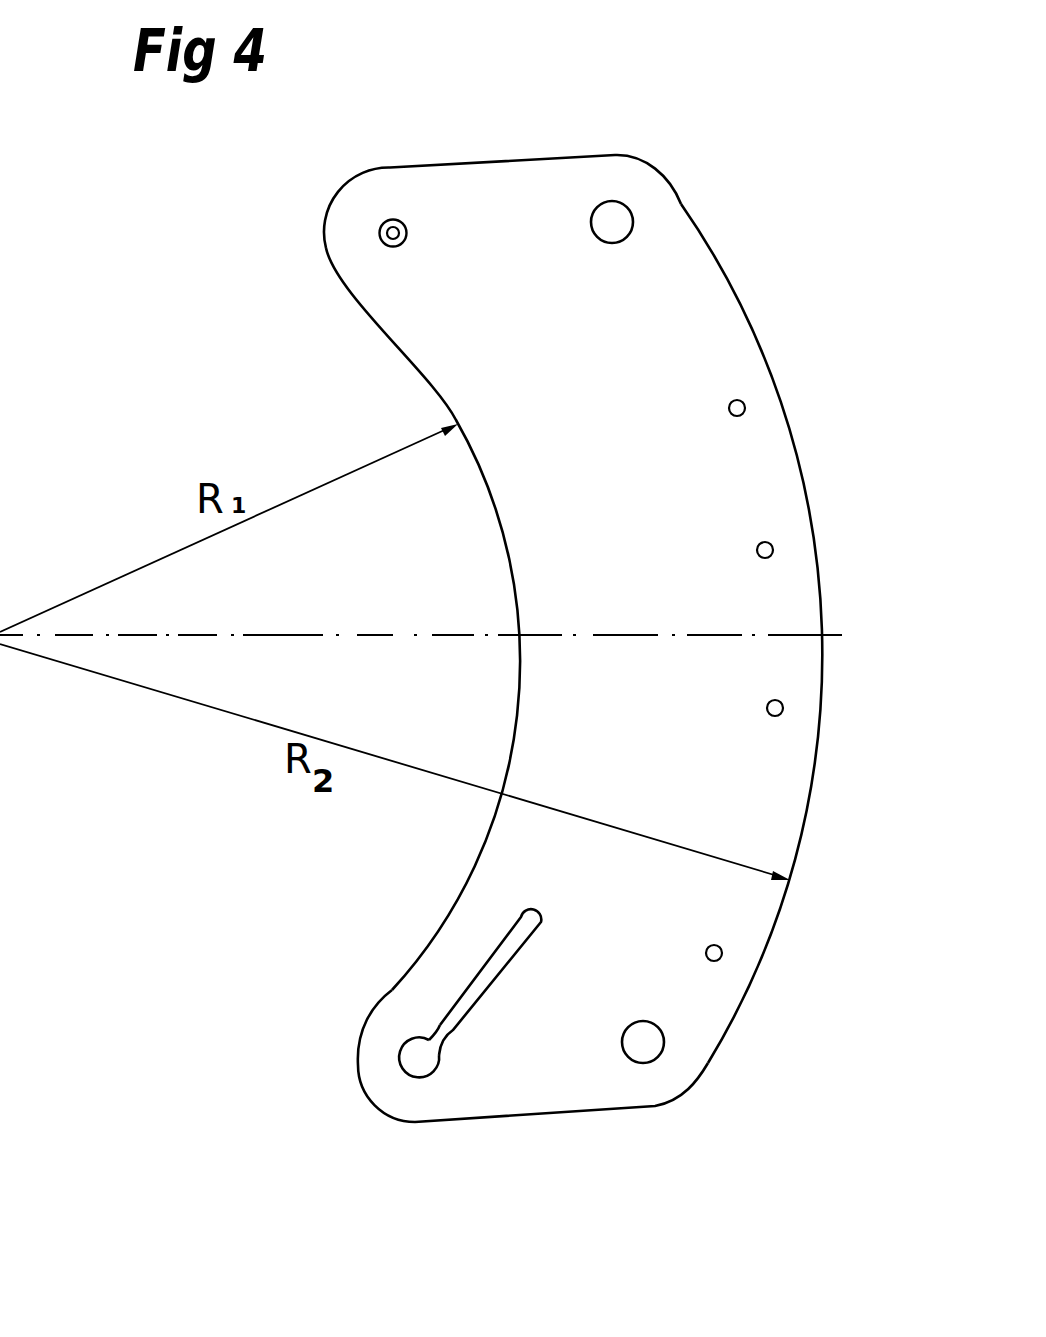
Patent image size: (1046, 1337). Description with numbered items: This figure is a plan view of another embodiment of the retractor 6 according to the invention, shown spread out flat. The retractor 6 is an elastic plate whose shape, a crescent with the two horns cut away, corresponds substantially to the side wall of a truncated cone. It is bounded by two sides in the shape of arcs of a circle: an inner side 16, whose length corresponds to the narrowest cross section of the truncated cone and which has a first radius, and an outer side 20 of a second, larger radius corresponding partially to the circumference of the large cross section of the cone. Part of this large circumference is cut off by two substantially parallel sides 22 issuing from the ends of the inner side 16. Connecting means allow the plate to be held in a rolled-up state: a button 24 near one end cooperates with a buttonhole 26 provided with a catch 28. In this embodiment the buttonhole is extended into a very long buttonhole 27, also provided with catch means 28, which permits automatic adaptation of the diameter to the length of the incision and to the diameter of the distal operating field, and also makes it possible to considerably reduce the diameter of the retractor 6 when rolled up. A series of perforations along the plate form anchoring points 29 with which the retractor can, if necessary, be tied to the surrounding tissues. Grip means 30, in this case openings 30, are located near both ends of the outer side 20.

The retractor 6 is at (536, 72).
The inner side 16 is at (510, 573).
The outer side 20 is at (790, 433).
The substantially parallel sides 22 is at (483, 159).
The button 24 is at (380, 238).
The buttonhole 26 is at (399, 1058).
The very long buttonhole 27 is at (492, 957).
The catch means 28 is at (431, 1033).
The anchoring points 29 is at (734, 400).
The grip means 30 is at (632, 208).